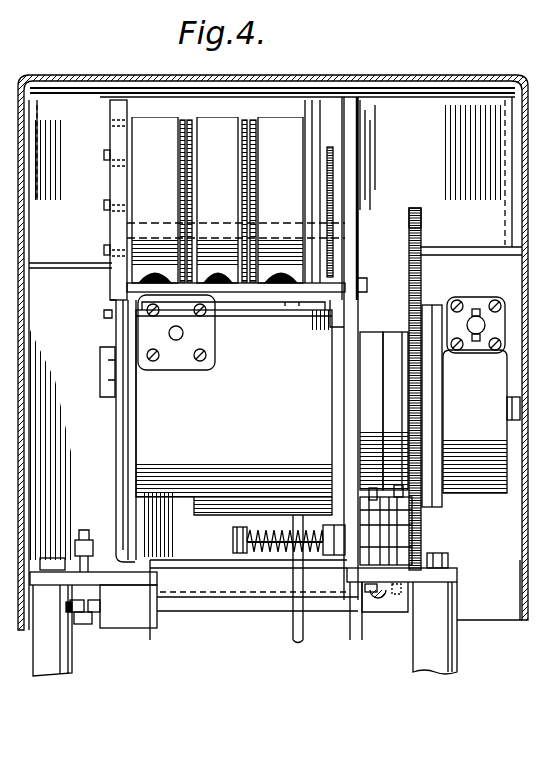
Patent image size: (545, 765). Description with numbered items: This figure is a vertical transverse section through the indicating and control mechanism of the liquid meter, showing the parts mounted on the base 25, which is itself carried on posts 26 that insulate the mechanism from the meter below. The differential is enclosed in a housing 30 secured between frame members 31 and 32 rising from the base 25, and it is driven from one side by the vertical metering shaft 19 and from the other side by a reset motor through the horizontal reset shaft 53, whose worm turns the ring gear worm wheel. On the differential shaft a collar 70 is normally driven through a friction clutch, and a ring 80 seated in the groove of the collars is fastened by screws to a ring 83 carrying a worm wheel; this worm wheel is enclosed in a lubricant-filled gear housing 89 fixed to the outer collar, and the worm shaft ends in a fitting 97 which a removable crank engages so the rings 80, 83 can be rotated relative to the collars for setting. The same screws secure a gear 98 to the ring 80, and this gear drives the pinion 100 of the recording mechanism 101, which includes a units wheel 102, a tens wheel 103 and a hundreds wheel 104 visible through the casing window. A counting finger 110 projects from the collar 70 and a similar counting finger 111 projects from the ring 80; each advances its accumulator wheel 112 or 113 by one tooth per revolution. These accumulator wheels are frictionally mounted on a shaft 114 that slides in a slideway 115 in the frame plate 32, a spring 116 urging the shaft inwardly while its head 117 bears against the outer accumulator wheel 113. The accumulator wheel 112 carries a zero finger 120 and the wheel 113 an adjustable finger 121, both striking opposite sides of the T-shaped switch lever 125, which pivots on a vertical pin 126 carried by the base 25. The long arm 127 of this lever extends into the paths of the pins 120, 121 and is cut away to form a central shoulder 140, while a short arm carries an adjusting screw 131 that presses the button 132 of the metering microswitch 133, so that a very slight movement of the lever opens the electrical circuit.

The vertical shaft 19 is at (290, 635).
The base 25 is at (118, 580).
The posts 26 is at (55, 665).
The differential housing 30 is at (230, 430).
The frame member 31 is at (112, 320).
The frame plate 32 is at (356, 320).
The reset shaft 53 is at (176, 340).
The collar 70 is at (371, 411).
The ring 80 is at (422, 362).
The ring 83 is at (432, 390).
The gear housing 89 is at (481, 421).
The fitting 97 is at (478, 322).
The gear 98 is at (422, 283).
The pinion 100 is at (421, 213).
The recording mechanism 101 is at (352, 140).
The units wheel 102 is at (300, 145).
The tens wheel 103 is at (232, 148).
The hundreds wheel 104 is at (138, 150).
The counting finger 110 is at (368, 494).
The counting finger 111 is at (400, 484).
The accumulator wheel 112 is at (400, 543).
The accumulator wheel 113 is at (398, 515).
The shaft 114 is at (232, 543).
The slideway 115 is at (332, 548).
The spring 116 is at (270, 550).
The head 117 is at (420, 540).
The zero finger 120 is at (358, 590).
The adjustable finger 121 is at (455, 598).
The switch lever 125 is at (232, 614).
The vertical pin 126 is at (84, 538).
The long arm 127 is at (386, 606).
The adjusting screw 131 is at (66, 608).
The button 132 is at (110, 612).
The microswitch 133 is at (128, 606).
The central shoulder 140 is at (375, 600).